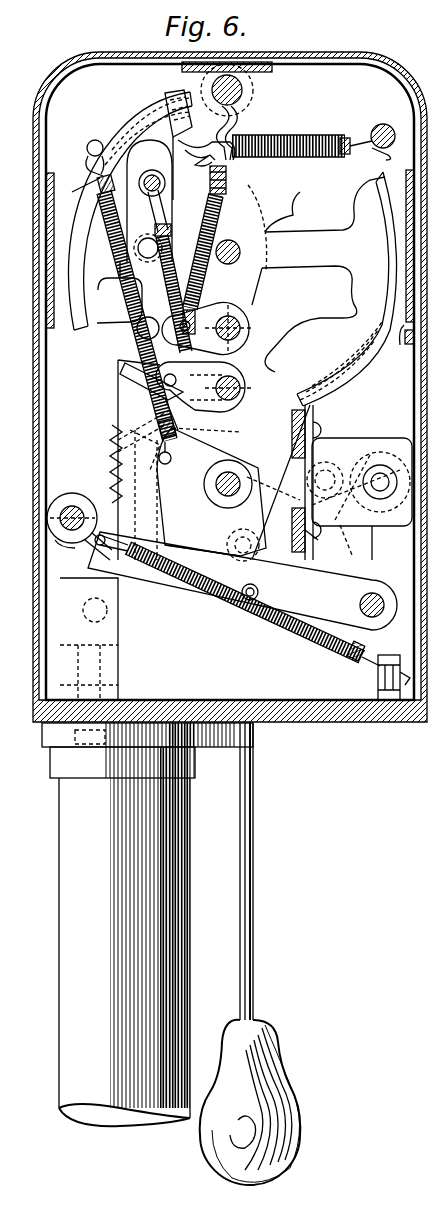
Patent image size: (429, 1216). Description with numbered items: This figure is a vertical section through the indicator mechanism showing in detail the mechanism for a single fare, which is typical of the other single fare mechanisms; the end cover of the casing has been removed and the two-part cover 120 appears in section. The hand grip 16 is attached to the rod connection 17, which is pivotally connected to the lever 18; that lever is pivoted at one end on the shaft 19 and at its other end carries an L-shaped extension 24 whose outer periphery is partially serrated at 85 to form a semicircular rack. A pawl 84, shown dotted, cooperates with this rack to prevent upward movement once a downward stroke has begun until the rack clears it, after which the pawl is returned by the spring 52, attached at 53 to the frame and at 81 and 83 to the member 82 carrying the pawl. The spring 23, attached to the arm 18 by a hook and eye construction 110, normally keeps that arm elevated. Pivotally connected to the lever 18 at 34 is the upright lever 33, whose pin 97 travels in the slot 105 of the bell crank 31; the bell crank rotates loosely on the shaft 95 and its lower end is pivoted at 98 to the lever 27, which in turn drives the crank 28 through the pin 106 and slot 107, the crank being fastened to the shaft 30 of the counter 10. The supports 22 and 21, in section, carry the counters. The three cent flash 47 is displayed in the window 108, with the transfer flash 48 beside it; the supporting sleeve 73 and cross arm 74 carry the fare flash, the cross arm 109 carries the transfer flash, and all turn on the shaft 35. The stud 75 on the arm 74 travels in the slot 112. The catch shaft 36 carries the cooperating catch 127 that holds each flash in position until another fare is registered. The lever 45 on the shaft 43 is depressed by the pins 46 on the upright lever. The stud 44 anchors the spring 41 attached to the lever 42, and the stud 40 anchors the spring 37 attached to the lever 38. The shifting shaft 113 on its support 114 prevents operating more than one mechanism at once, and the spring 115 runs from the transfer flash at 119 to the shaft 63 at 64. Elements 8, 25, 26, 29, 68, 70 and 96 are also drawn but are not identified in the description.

The handle tube 8 is at (184, 827).
The counter 10 is at (385, 448).
The hand grip 16 is at (285, 1085).
The rod connection 17 is at (255, 967).
The lever 18 is at (353, 550).
The shaft 19 is at (380, 598).
The support 21 is at (290, 560).
The support 22 is at (305, 418).
The spring 23 is at (228, 185).
The L-shaped extension 24 is at (182, 470).
The pivot pin 25 is at (243, 93).
The link 26 is at (240, 115).
The lever 27 is at (276, 480).
The crank 28 is at (365, 455).
The shaft 29 is at (379, 550).
The counter shaft 30 is at (380, 490).
The bell crank 31 is at (222, 458).
The upright lever 33 is at (118, 398).
The pivot connection 34 is at (135, 585).
The flash shaft 35 is at (218, 225).
The catch shaft 36 is at (236, 320).
The spring 37 is at (172, 270).
The lever 38 is at (200, 315).
The stud 40 is at (165, 200).
The spring 41 is at (120, 240).
The lever 42 is at (165, 395).
The shaft 43 is at (240, 380).
The stud 44 is at (93, 148).
The lever 45 is at (125, 368).
The pin 46 is at (137, 332).
The three cent flash 47 is at (74, 330).
The transfer flash 48 is at (135, 128).
The spring 52 is at (200, 575).
The spring attachment 53 is at (378, 685).
The shaft 63 is at (385, 155).
The spring attachment 64 is at (384, 124).
The cover block 68 is at (312, 72).
The pawl 70 is at (130, 440).
The supporting sleeve 73 is at (240, 240).
The cross arm 74 is at (173, 130).
The stud 75 is at (172, 232).
The spring attachment 81 is at (108, 532).
The pawl member 82 is at (75, 505).
The spring attachment 83 is at (92, 548).
The pawl 84 is at (65, 505).
The rack 85 is at (112, 448).
The shaft 95 is at (238, 478).
The plate edge 96 is at (222, 520).
The pin 97 is at (118, 433).
The pivotal connection 98 is at (246, 562).
The slot 105 is at (133, 495).
The pin 106 is at (336, 465).
The slot 107 is at (326, 543).
The window 108 is at (55, 185).
The cross arm 109 is at (318, 312).
The hook and eye construction 110 is at (170, 458).
The slot 112 is at (152, 172).
The shifting shaft 113 is at (100, 616).
The support 114 is at (108, 668).
The spring 115 is at (316, 146).
The spring attachment 119 is at (215, 128).
The cover 120 is at (372, 58).
The catch 127 is at (120, 300).